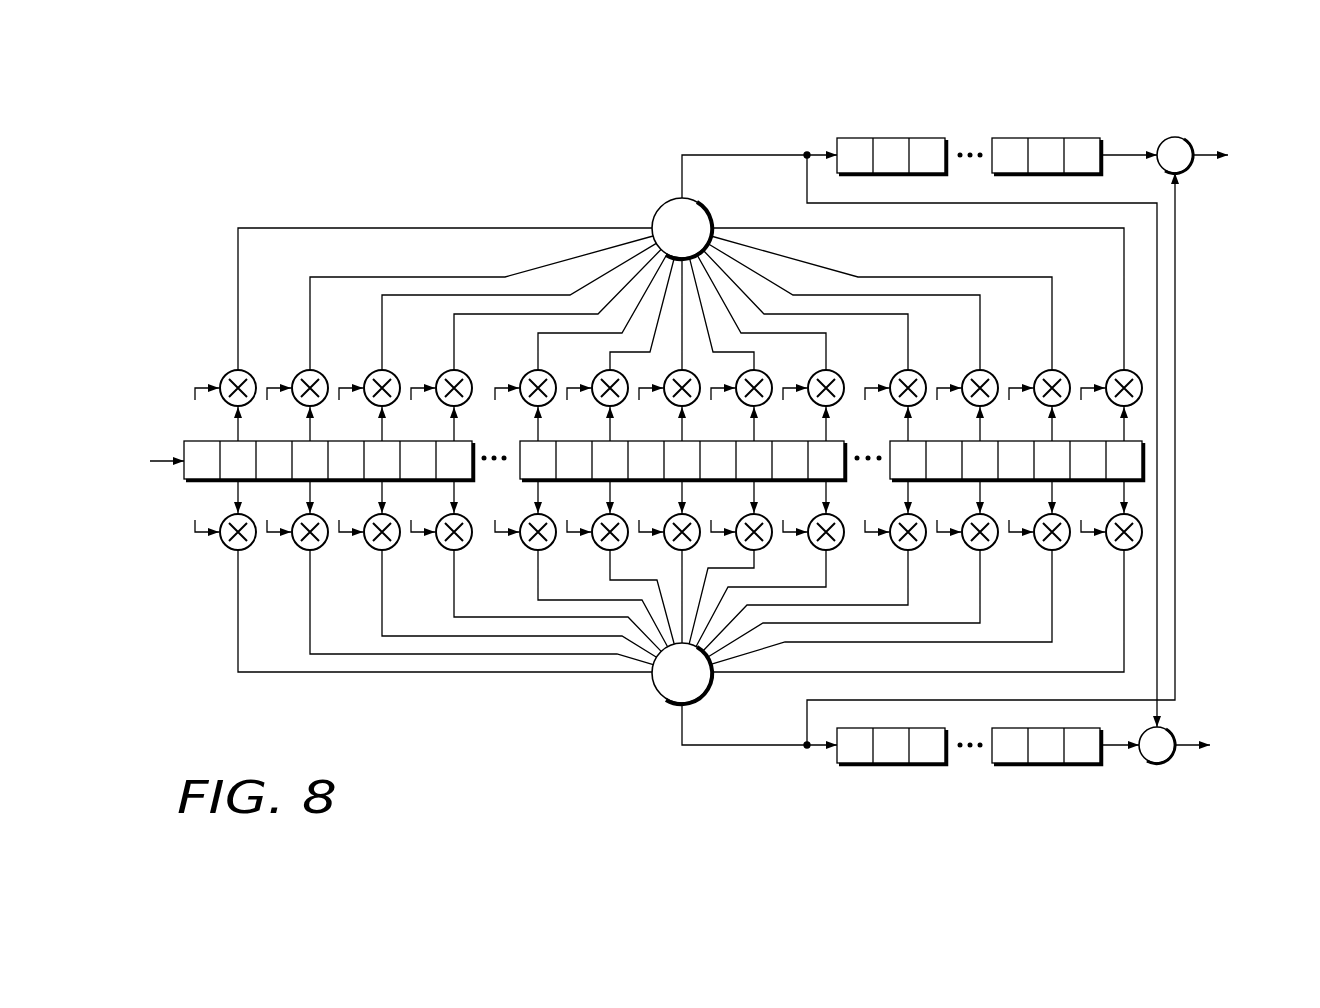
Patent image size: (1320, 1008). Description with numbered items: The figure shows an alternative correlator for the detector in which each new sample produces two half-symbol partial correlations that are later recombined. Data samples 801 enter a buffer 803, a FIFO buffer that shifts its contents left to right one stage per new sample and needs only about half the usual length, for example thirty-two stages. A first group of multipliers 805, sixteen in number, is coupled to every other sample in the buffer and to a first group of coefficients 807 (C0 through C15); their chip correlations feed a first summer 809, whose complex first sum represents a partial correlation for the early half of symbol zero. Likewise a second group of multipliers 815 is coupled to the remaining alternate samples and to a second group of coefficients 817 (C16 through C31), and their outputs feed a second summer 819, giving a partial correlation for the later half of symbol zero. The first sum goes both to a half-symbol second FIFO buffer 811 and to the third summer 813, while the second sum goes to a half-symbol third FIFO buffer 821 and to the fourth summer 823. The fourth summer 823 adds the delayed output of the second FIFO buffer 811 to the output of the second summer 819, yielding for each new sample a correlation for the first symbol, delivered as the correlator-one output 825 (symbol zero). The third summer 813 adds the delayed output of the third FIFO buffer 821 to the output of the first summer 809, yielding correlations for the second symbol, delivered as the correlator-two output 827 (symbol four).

The data samples 801 is at (123, 433).
The buffer 803 is at (183, 480).
The first group of multipliers 805 is at (218, 370).
The first group of coefficients 807 is at (185, 398).
The first summer 809 is at (710, 215).
The second FIFO buffer 811 is at (860, 138).
The third summer 813 is at (1160, 763).
The second group of multipliers 815 is at (225, 555).
The second group of coefficients 817 is at (180, 517).
The second summer 819 is at (708, 693).
The third FIFO buffer 821 is at (860, 765).
The fourth summer 823 is at (1165, 170).
The correlator-1 output 825 is at (1258, 153).
The correlator-2 output 827 is at (1236, 708).